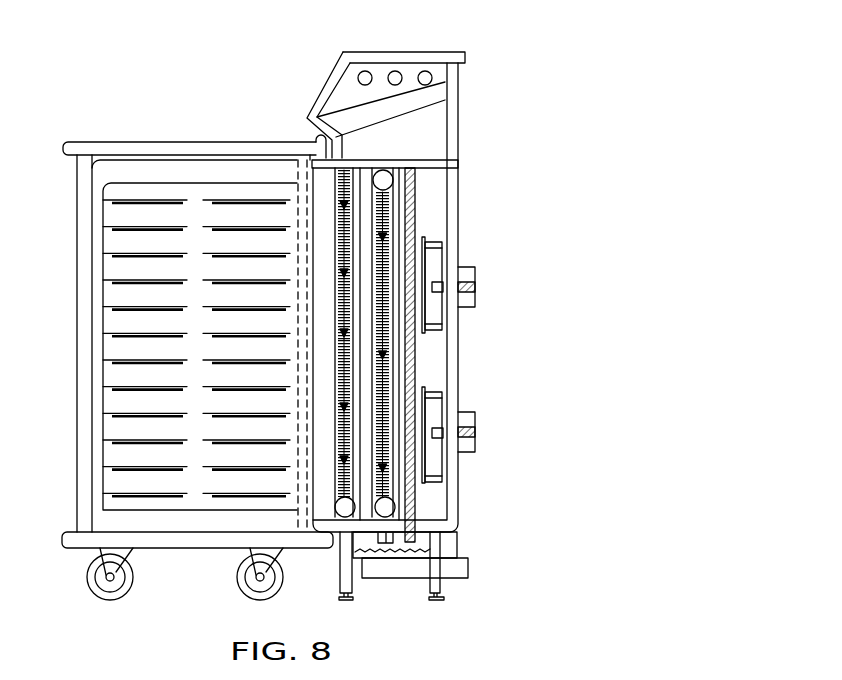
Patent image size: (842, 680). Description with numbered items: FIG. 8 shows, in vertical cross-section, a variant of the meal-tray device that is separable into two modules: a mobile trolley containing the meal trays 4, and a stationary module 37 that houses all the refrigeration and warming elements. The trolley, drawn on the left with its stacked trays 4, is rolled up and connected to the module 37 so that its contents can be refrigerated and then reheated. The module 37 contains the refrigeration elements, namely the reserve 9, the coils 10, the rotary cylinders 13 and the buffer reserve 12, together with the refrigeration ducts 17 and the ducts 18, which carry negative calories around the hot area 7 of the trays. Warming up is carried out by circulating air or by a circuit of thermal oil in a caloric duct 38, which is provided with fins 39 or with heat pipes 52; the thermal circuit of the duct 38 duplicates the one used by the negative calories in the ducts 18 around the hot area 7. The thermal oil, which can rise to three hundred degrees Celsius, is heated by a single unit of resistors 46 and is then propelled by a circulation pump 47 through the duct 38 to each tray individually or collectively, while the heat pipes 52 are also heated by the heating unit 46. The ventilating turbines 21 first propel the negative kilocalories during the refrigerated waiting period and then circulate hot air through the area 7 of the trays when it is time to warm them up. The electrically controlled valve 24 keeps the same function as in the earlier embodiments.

The meal trays 4 is at (138, 310).
The hot area of the trays 7 is at (205, 348).
The reserve 9 is at (338, 97).
The coils 10 is at (395, 72).
The buffer reserve 12 is at (437, 138).
The rotary cylinders 13 is at (440, 90).
The refrigeration ducts 17 is at (388, 222).
The ducts 18 is at (433, 222).
The ventilating turbines 21 is at (436, 259).
The electrically controlled valve 24 is at (386, 507).
The module 37 is at (306, 117).
The caloric duct 38 is at (339, 245).
The fins 39 is at (345, 380).
The unit of resistors 46 is at (457, 550).
The circulation pump 47 is at (344, 508).
The heat pipes 52 is at (418, 348).